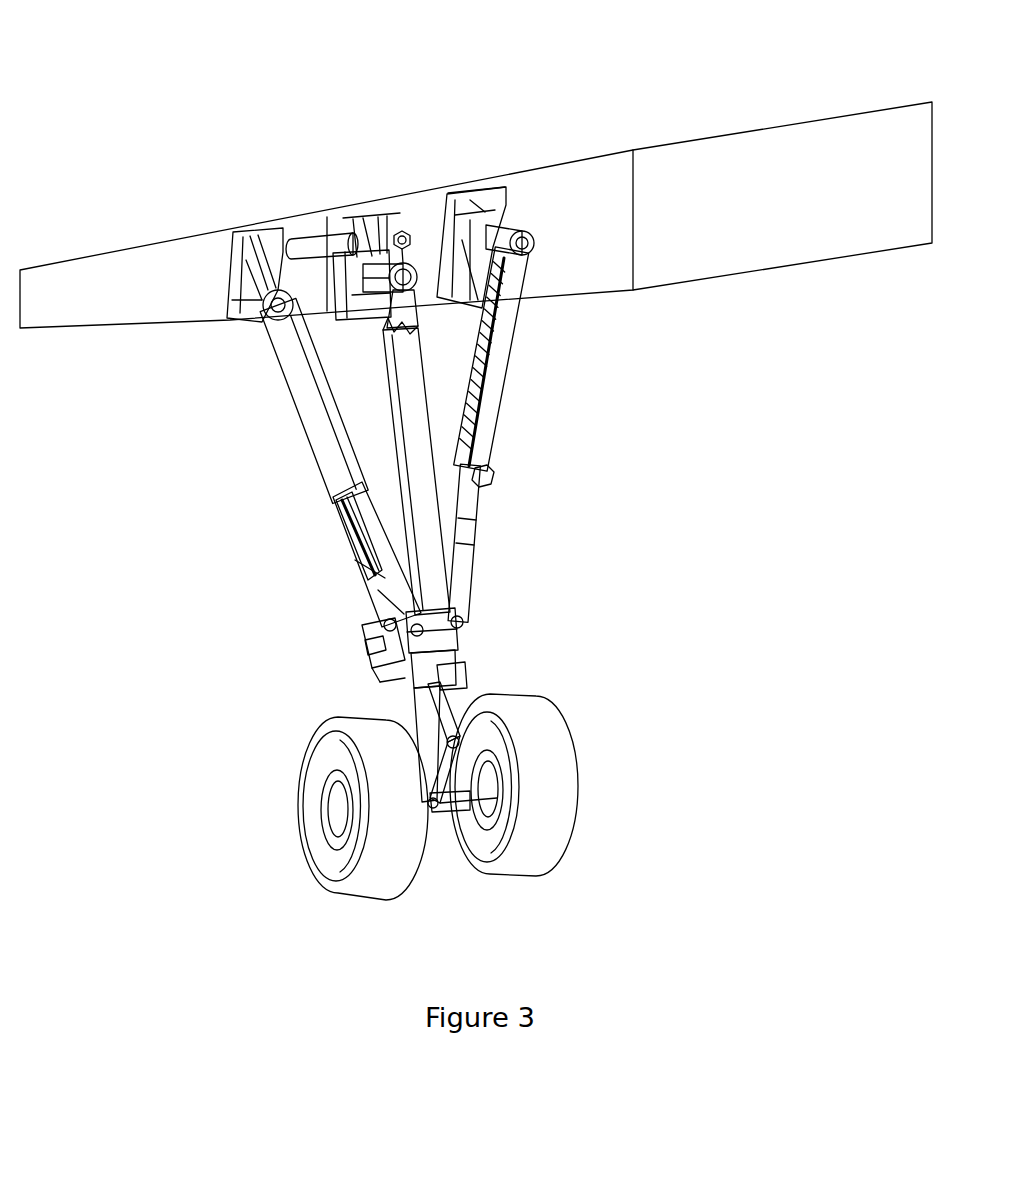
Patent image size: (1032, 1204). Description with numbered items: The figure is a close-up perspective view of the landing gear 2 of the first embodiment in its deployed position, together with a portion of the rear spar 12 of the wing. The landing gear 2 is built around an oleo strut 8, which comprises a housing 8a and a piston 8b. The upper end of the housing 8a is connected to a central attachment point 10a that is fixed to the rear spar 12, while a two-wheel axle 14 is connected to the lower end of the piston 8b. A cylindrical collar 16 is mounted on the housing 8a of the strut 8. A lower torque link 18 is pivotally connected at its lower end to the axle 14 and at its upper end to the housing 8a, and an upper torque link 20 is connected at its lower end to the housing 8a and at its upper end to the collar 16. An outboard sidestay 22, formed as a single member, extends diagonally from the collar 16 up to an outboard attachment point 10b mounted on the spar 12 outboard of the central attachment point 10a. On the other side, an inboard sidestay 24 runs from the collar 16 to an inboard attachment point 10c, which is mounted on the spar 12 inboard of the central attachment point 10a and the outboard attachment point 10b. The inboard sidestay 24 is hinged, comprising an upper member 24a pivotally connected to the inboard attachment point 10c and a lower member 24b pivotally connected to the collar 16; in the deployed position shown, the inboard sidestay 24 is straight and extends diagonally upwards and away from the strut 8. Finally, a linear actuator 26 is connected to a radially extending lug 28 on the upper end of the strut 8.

The landing gear 2 is at (266, 489).
The oleo strut 8 is at (425, 551).
The housing 8a is at (415, 390).
The piston 8b is at (418, 710).
The central attachment point 10a is at (380, 200).
The outboard attachment point 10b is at (233, 253).
The inboard attachment point 10c is at (495, 195).
The rear spar 12 is at (818, 208).
The two-wheel axle 14 is at (594, 715).
The cylindrical collar 16 is at (435, 638).
The lower torque link 18 is at (458, 776).
The upper torque link 20 is at (367, 637).
The outboard sidestay 22 is at (318, 420).
The inboard sidestay 24 is at (576, 437).
The upper member 24a is at (492, 405).
The lower member 24b is at (468, 520).
The linear actuator 26 is at (318, 243).
The radially extending lug 28 is at (403, 235).